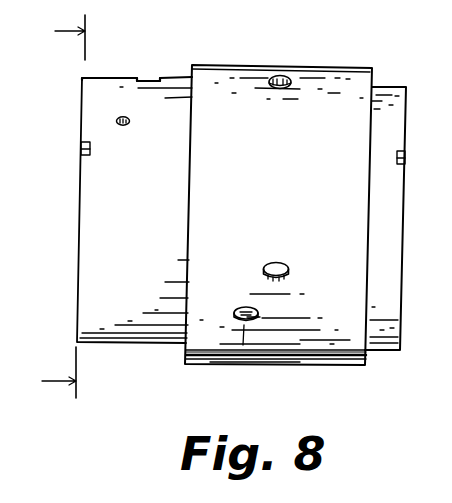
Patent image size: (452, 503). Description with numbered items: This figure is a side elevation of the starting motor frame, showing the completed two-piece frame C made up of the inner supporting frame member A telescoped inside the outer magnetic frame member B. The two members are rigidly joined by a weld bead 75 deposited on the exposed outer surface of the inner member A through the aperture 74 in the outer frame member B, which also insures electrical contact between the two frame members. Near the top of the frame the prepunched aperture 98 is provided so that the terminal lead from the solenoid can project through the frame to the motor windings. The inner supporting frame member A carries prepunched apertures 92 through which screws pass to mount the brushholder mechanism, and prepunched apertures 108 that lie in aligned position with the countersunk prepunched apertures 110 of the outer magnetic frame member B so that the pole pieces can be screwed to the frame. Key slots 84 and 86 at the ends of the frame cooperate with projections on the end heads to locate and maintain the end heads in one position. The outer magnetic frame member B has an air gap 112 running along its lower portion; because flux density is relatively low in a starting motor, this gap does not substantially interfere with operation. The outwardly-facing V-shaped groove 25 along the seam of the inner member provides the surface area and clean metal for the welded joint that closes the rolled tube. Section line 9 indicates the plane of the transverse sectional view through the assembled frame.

The section line 9- 9 is at (49, 207).
The inner supporting frame member A is at (106, 78).
The outer magnetic frame member B is at (220, 75).
The two-piece frame C is at (384, 87).
The prepunched aperture 98 is at (151, 82).
The key slot 84 is at (82, 152).
The key slot 86 is at (403, 160).
The prepunched aperture 92 is at (129, 122).
The prepunched aperture 110 is at (285, 75).
The prepunched aperture 108 is at (275, 262).
The aperture 74 is at (242, 305).
The weld bead 75 is at (245, 322).
The air gap 112 is at (308, 357).
The V-shaped groove 25 is at (444, 298).